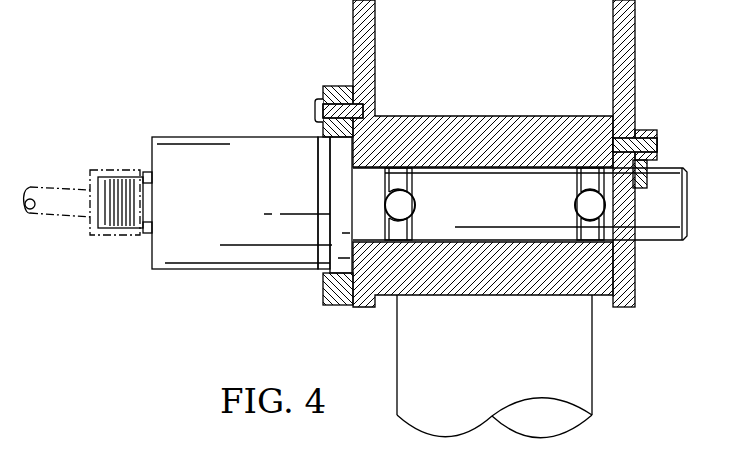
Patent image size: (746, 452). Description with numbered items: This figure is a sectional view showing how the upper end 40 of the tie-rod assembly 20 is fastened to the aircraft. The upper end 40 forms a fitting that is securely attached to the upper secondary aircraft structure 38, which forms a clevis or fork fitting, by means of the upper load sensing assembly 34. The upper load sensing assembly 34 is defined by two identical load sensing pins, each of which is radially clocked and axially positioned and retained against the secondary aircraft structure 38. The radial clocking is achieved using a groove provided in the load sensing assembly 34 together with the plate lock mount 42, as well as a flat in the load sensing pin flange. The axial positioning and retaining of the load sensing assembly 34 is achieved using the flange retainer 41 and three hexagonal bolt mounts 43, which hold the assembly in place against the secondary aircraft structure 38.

The tie-rod assembly 20 is at (594, 367).
The upper load sensing assembly 34 is at (228, 136).
The upper secondary aircraft structure 38 is at (633, 72).
The upper end of the tie-rod assembly 40 is at (493, 116).
The flange retainer 41 is at (322, 292).
The plate lock mount 42 is at (660, 143).
The hexagonal bolt mount 43 is at (317, 110).